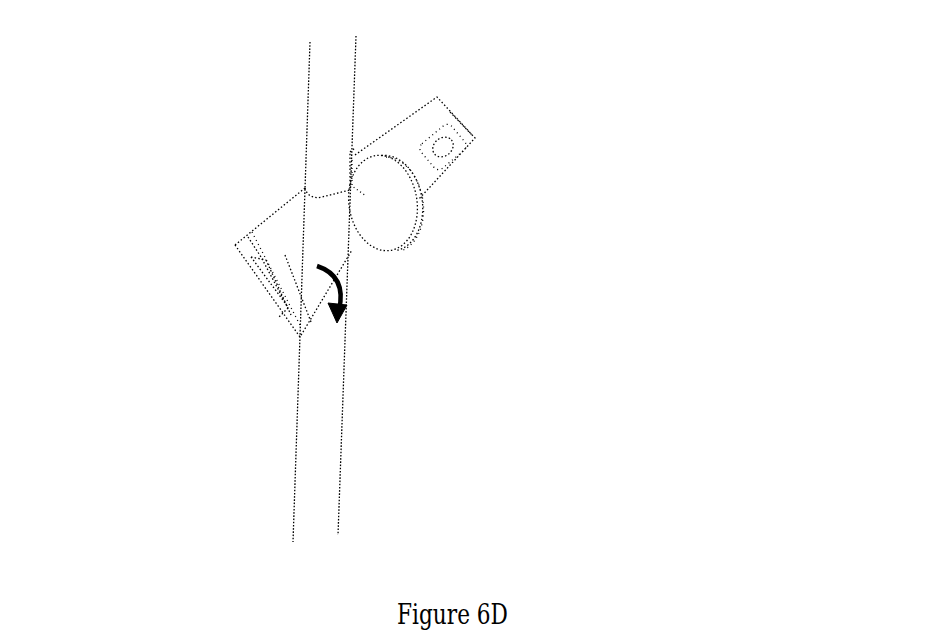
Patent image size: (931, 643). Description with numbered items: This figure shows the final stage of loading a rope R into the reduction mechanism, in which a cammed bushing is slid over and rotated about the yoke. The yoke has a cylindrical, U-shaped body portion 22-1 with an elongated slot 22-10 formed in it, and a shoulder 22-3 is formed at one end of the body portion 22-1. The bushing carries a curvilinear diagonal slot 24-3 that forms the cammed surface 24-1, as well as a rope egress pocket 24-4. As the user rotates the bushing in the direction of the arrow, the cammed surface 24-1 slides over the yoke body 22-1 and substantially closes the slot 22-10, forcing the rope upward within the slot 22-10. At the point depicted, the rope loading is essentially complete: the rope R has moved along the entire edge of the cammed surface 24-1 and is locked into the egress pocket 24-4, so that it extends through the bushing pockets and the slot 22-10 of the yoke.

The rope R is at (322, 67).
The shoulder 22-3 is at (710, 100).
The elongated slot 22-10 is at (257, 262).
The cammed surface 24-1 is at (300, 237).
The rope egress pocket 24-4 is at (307, 183).
The curvilinear diagonal slot 24-3 is at (380, 230).
The U-shaped body portion 22-1 is at (352, 248).